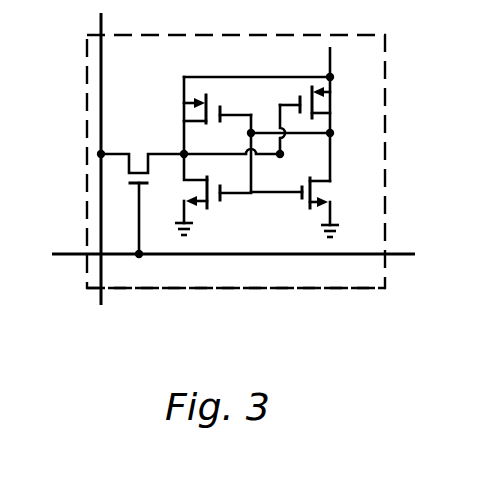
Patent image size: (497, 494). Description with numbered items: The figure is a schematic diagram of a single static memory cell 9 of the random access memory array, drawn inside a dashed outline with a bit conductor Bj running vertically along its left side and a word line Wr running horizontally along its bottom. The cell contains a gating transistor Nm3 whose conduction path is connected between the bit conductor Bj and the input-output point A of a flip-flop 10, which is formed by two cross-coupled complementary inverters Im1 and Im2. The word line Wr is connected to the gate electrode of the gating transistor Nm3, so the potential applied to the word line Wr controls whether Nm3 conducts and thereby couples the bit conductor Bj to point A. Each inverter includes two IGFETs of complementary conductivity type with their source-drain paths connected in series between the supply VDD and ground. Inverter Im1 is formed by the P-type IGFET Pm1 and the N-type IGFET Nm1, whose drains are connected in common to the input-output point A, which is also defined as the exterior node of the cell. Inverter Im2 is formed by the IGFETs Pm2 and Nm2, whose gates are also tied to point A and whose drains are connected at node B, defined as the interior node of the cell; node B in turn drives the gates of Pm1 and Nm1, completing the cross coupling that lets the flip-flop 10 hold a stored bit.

The memory cell 9 is at (350, 283).
The flip-flop 10 is at (281, 68).
The bit conductor Bj is at (101, 67).
The word line Wr is at (83, 253).
The supply potential VDD is at (346, 63).
The P-type IGFET of inverter Im1 Pm1 is at (196, 115).
The P-type IGFET of inverter Im2 Pm2 is at (324, 102).
The N-type IGFET of inverter Im1 Nm1 is at (199, 188).
The N-type IGFET of inverter Im2 Nm2 is at (310, 201).
The gating transistor Nm3 is at (140, 195).
The first complementary inverter Im1 is at (230, 235).
The second complementary inverter Im2 is at (307, 235).
The I/O point A is at (188, 152).
The interior node B is at (333, 135).